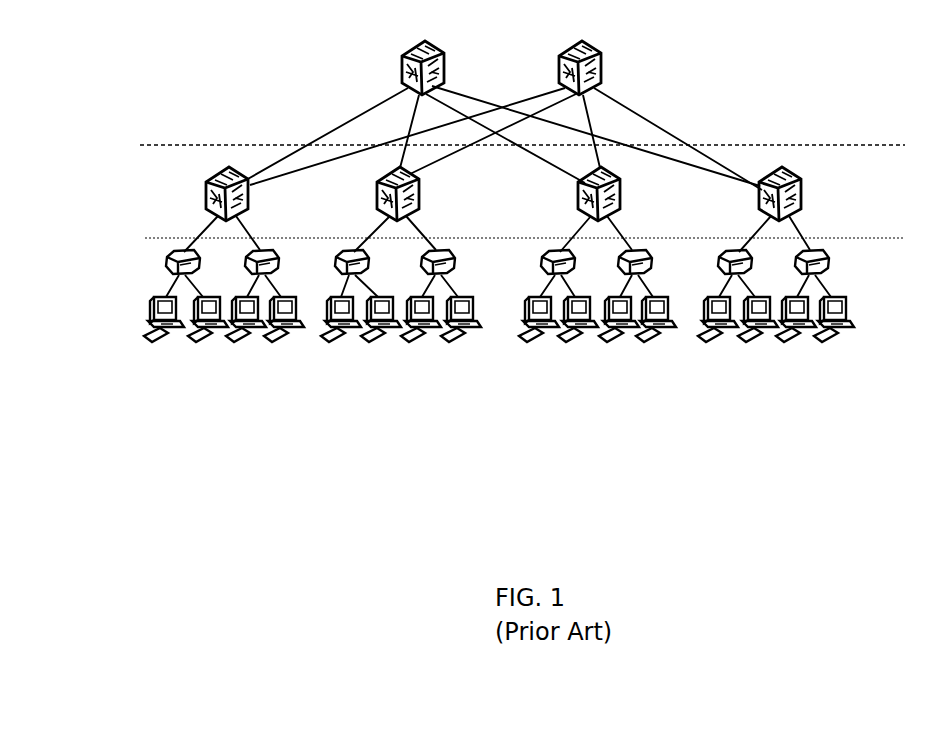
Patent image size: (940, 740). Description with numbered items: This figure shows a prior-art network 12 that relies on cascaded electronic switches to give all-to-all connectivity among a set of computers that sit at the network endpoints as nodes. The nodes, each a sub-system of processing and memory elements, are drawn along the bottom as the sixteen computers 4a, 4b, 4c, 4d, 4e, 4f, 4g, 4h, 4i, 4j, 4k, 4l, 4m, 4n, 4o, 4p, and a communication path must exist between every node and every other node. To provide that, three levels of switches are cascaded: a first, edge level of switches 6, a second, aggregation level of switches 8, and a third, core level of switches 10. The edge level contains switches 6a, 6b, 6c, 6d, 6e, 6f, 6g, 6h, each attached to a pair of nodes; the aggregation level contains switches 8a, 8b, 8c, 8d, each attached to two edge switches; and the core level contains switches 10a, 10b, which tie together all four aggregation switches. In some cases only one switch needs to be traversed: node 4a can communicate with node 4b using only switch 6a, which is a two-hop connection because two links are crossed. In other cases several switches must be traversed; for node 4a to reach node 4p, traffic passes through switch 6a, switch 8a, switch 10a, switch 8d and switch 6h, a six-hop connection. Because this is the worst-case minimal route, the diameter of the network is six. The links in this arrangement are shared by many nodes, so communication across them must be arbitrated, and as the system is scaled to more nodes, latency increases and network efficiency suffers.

The network 12 is at (149, 424).
The third level of switches 10 is at (263, 97).
The switch 10a is at (400, 62).
The switch 10b is at (602, 66).
The second level of switches 8 is at (169, 206).
The switch 8a is at (222, 180).
The switch 8b is at (378, 192).
The switch 8c is at (578, 192).
The switch 8d is at (805, 185).
The first level of switches 6 is at (113, 286).
The switch 6a is at (170, 254).
The switch 6b is at (277, 258).
The switch 6c is at (335, 270).
The switch 6d is at (432, 273).
The switch 6e is at (545, 262).
The switch 6f is at (620, 272).
The switch 6g is at (722, 268).
The switch 6h is at (798, 274).
The node 4a is at (158, 341).
The node 4b is at (197, 341).
The node 4c is at (238, 341).
The node 4d is at (280, 341).
The node 4e is at (335, 341).
The node 4f is at (378, 341).
The node 4g is at (423, 341).
The node 4h is at (468, 341).
The node 4i is at (537, 341).
The node 4j is at (573, 341).
The node 4k is at (614, 341).
The node 4l is at (660, 341).
The node 4m is at (722, 341).
The node 4n is at (755, 341).
The node 4o is at (798, 341).
The node 4p is at (845, 341).